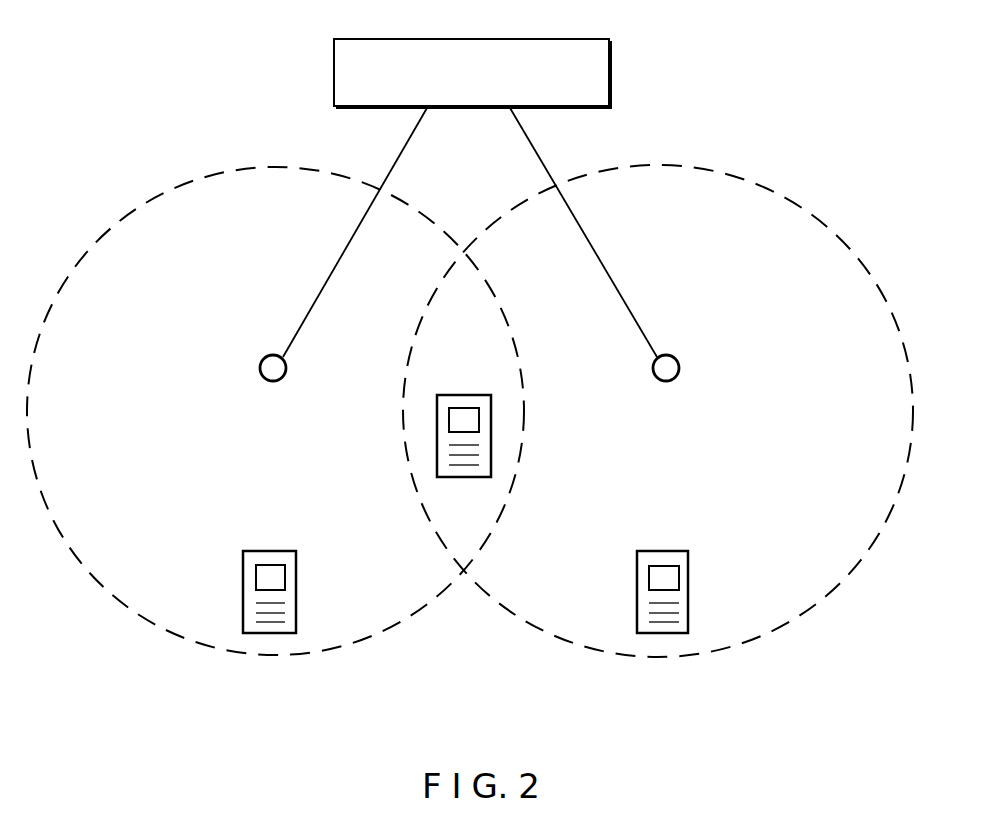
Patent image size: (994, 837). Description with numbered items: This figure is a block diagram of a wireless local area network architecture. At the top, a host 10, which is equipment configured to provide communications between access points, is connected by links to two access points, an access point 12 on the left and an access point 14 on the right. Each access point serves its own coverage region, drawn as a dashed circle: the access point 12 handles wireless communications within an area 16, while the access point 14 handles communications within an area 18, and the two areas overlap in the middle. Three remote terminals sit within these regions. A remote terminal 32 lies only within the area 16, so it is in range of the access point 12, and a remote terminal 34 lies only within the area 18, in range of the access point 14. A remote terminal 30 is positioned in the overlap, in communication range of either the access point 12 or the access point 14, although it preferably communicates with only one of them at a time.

The host 10 is at (609, 72).
The access point 12 is at (260, 368).
The access point 14 is at (680, 362).
The area 16 is at (93, 514).
The area 18 is at (884, 513).
The remote terminal 30 is at (466, 395).
The remote terminal 32 is at (271, 551).
The remote terminal 34 is at (663, 551).